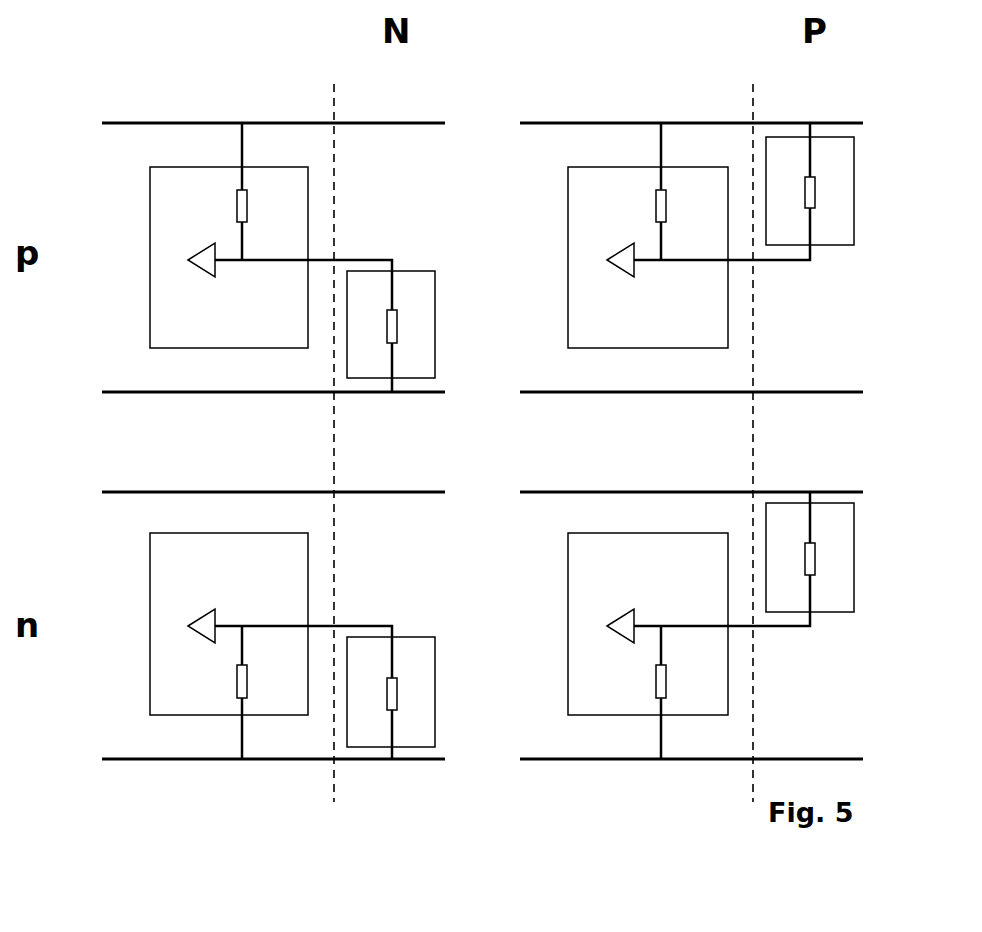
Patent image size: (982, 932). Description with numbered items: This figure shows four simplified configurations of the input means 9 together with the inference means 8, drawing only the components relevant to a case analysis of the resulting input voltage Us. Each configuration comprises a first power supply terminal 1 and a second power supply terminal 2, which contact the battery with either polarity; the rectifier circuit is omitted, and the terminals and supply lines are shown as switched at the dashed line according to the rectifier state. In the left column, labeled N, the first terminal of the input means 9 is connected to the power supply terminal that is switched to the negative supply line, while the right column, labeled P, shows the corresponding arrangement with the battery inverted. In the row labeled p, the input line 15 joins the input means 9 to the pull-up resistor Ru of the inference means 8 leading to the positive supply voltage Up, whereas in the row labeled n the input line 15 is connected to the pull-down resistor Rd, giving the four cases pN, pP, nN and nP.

The first power supply terminal 1 is at (431, 393).
The second power supply terminal 2 is at (431, 124).
The inference means 8 is at (439, 441).
The input means 9 is at (600, 442).
The input line 15 is at (381, 257).